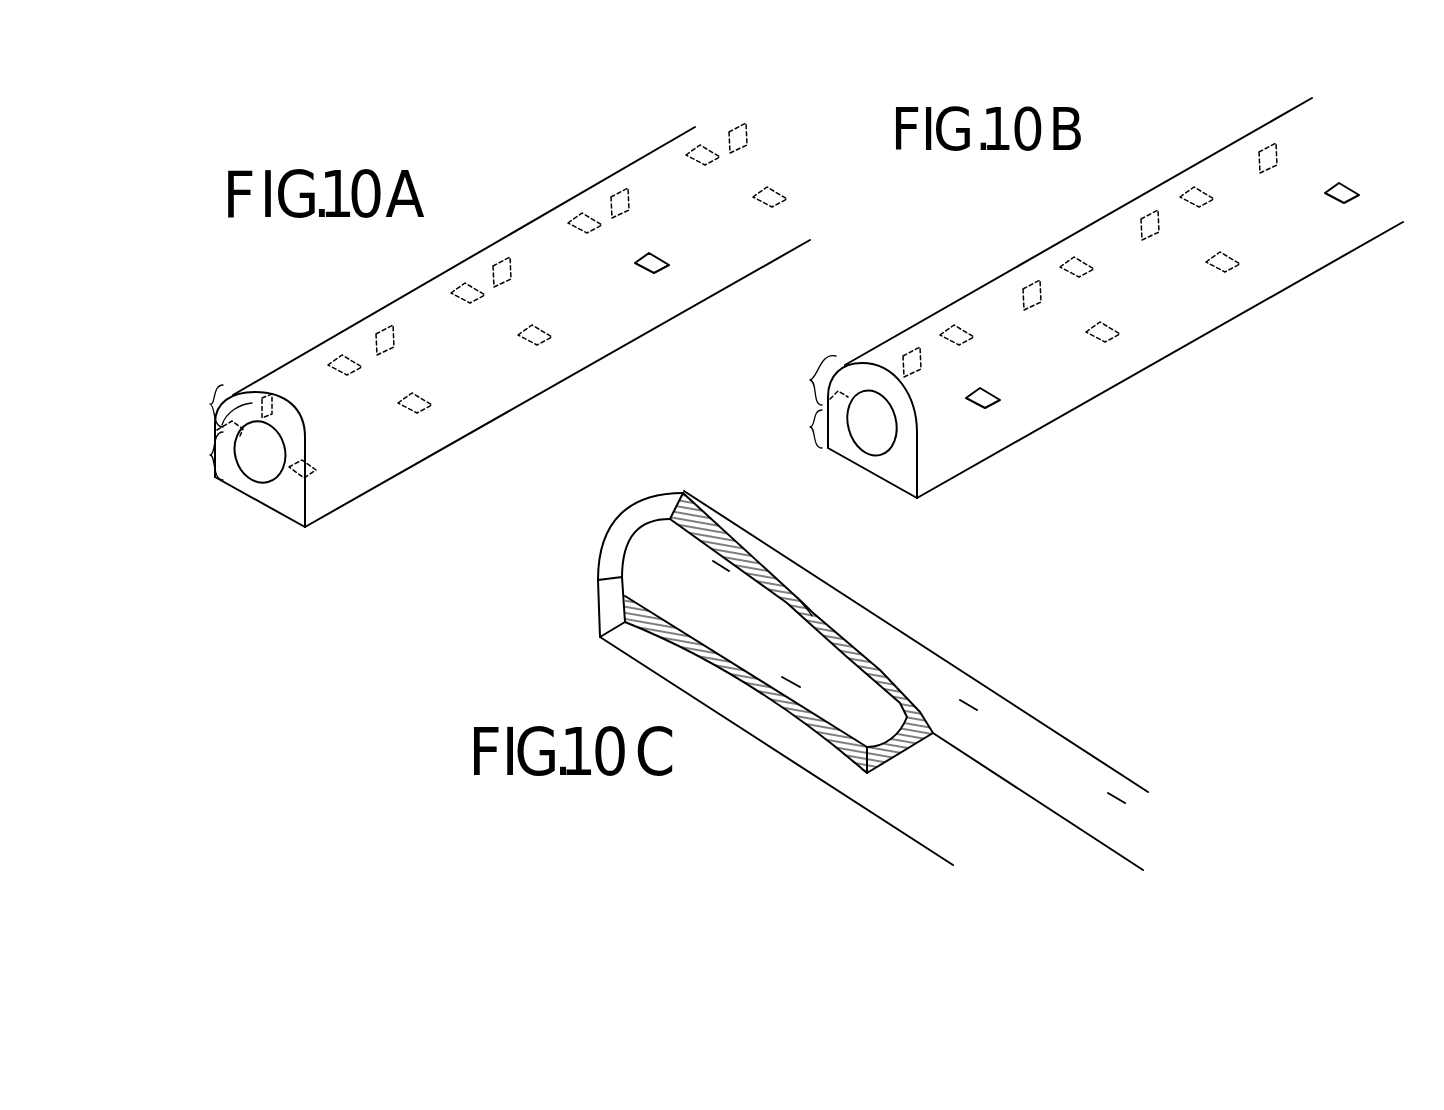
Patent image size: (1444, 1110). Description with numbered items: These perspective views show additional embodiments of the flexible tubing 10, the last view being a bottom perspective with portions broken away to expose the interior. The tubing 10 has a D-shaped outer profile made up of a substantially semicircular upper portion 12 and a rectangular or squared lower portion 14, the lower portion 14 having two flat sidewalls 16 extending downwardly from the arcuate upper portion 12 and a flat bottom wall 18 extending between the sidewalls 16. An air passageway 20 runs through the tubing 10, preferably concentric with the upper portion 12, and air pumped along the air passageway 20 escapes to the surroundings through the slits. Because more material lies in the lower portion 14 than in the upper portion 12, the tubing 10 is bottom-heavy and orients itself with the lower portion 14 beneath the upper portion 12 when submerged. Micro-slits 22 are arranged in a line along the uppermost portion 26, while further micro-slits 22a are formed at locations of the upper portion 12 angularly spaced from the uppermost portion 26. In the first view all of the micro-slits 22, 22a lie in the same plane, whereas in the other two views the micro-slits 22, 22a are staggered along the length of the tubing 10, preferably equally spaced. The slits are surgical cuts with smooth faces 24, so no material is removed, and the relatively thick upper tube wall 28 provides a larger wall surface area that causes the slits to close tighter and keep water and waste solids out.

In FIG. 10A, the flexible tubing 10 is at (530, 422).
In FIG. 10B, the flexible tubing 10 is at (1178, 374).
In FIG. 10C, the flexible tubing 10 is at (737, 756).
In FIG. 10A, the upper portion 12 is at (197, 406).
In FIG. 10B, the upper portion 12 is at (809, 380).
In FIG. 10A, the lower portion 14 is at (197, 455).
In FIG. 10B, the lower portion 14 is at (799, 429).
In FIG. 10A, the sidewalls 16 is at (315, 523).
In FIG. 10B, the sidewalls 16 is at (920, 464).
In FIG. 10C, the sidewalls 16 is at (598, 613).
In FIG. 10A, the bottom wall 18 is at (243, 498).
In FIG. 10B, the bottom wall 18 is at (853, 456).
In FIG. 10C, the bottom wall 18 is at (955, 840).
In FIG. 10A, the air passageway 20 is at (246, 463).
In FIG. 10B, the air passageway 20 is at (858, 434).
In FIG. 10C, the air passageway 20 is at (873, 702).
In FIG. 10A, the micro-slits 22 is at (496, 262).
In FIG. 10B, the micro-slits 22 is at (1033, 282).
In FIG. 10C, the micro-slits 22 is at (727, 563).
In FIG. 10A, the micro-slits 22a is at (453, 285).
In FIG. 10B, the micro-slits 22a is at (1082, 262).
In FIG. 10C, the micro-slits 22a is at (637, 583).
In FIG. 10C, the smooth faces 24 is at (810, 610).
In FIG. 10A, the uppermost portion 26 is at (258, 394).
In FIG. 10B, the uppermost portion 26 is at (872, 372).
In FIG. 10C, the uppermost portion 26 is at (660, 493).
In FIG. 10A, the upper tube wall 28 is at (241, 406).
In FIG. 10C, the upper tube wall 28 is at (632, 523).